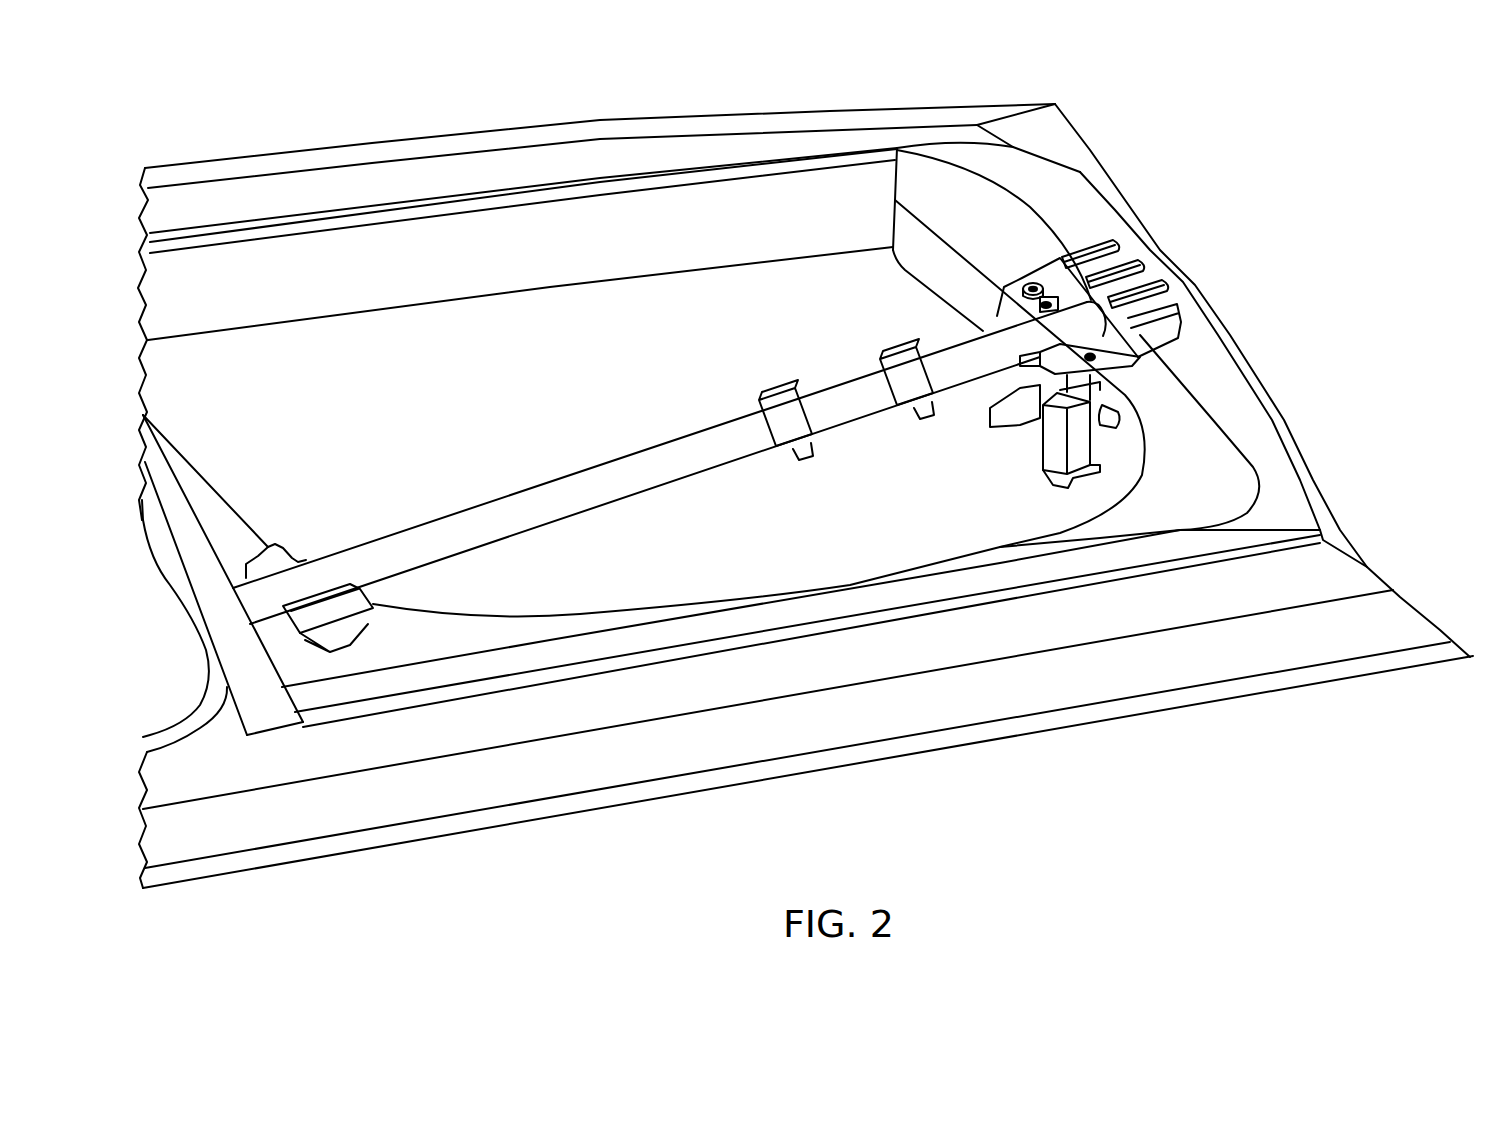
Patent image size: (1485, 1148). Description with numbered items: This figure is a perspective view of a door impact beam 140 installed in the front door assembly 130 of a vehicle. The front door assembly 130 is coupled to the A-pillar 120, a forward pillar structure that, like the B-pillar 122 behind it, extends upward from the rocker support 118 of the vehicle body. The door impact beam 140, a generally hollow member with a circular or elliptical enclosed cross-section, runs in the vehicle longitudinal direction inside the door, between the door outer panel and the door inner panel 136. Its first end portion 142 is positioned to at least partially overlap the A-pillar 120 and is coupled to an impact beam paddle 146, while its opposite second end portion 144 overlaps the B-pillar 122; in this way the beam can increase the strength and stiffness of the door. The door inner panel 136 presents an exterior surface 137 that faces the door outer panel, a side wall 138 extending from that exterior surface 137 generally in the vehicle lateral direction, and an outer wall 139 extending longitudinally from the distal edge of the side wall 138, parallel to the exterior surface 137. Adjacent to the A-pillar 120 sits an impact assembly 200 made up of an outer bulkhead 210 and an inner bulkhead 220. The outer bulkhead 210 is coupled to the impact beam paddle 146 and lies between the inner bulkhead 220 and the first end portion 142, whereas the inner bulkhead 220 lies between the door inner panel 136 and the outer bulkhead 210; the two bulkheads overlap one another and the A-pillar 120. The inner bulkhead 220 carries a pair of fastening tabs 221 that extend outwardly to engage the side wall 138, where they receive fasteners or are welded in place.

The rocker support 118 is at (603, 782).
The A-pillar 120 is at (1040, 152).
The B-pillar 122 is at (177, 595).
The front door assembly 130 is at (434, 122).
The door inner panel 136 is at (687, 286).
The exterior surface 137 is at (620, 367).
The side wall 138 is at (917, 257).
The outer wall 139 is at (1252, 392).
The door impact beam 140 is at (473, 482).
The first end portion 142 is at (958, 349).
The second end portion 144 is at (318, 568).
The impact beam paddle 146 is at (1053, 268).
The impact assembly 200 is at (1093, 427).
The outer bulkhead 210 is at (1046, 366).
The inner bulkhead 220 is at (1040, 444).
The fastening tabs 221 is at (1118, 413).